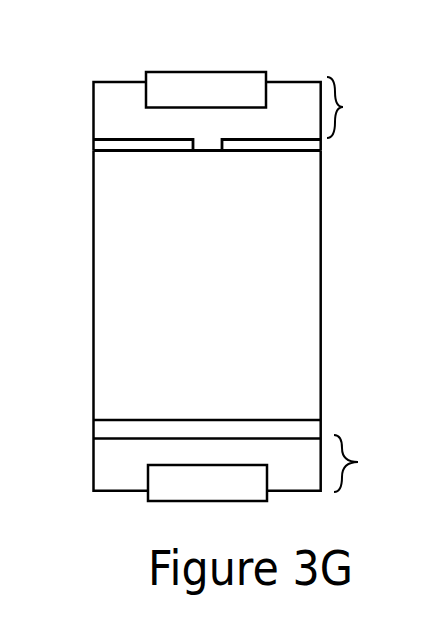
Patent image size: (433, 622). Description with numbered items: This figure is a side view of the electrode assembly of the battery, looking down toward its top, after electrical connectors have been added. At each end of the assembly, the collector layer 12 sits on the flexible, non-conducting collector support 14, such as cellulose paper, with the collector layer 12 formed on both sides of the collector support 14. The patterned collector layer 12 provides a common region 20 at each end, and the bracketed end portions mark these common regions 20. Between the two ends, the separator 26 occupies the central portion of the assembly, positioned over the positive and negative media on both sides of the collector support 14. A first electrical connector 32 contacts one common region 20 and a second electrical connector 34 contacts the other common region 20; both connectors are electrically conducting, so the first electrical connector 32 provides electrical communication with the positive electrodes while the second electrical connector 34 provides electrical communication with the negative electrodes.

The collector layer 12 is at (287, 95).
The collector support 14 is at (110, 144).
The common region 20 is at (368, 282).
The separator 26 is at (297, 288).
The first electrical connector 32 is at (178, 70).
The second electrical connector 34 is at (152, 500).